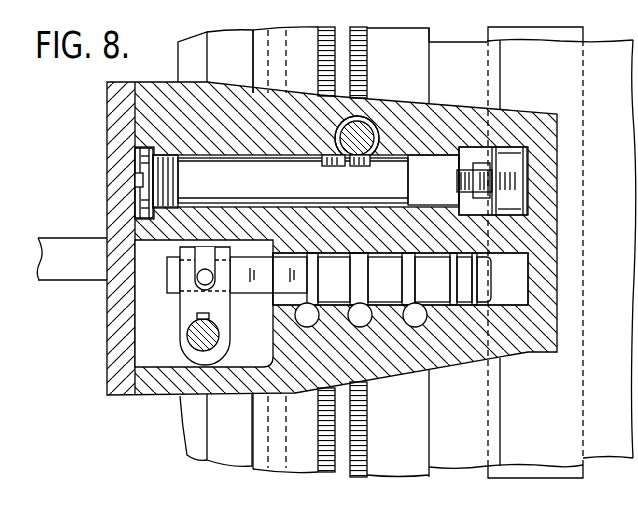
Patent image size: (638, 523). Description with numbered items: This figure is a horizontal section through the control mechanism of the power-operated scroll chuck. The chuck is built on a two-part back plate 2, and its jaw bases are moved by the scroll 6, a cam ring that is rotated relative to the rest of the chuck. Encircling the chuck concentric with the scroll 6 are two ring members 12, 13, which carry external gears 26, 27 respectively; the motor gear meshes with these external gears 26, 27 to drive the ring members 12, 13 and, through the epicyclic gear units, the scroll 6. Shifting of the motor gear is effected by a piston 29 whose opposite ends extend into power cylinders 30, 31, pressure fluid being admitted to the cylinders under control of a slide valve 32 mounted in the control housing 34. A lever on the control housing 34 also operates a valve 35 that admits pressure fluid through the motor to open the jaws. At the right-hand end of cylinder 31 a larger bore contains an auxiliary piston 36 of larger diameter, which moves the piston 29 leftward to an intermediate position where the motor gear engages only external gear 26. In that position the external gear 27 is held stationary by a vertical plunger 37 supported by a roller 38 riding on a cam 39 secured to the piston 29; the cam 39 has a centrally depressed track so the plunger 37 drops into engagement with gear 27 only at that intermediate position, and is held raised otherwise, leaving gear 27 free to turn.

The back plate 2 is at (222, 458).
The scroll 6 is at (543, 470).
The ring member 12 is at (295, 463).
The ring member 13 is at (412, 467).
The external gear 26 is at (327, 472).
The external gear 27 is at (362, 477).
The piston 29 is at (188, 183).
The power cylinder 30 is at (178, 153).
The power cylinder 31 is at (433, 160).
The slide valve 32 is at (487, 290).
The control housing 34 is at (155, 392).
The valve 35 is at (322, 288).
The auxiliary piston 36 is at (505, 153).
The vertical plunger 37 is at (362, 140).
The roller 38 is at (353, 158).
The cam 39 is at (327, 163).